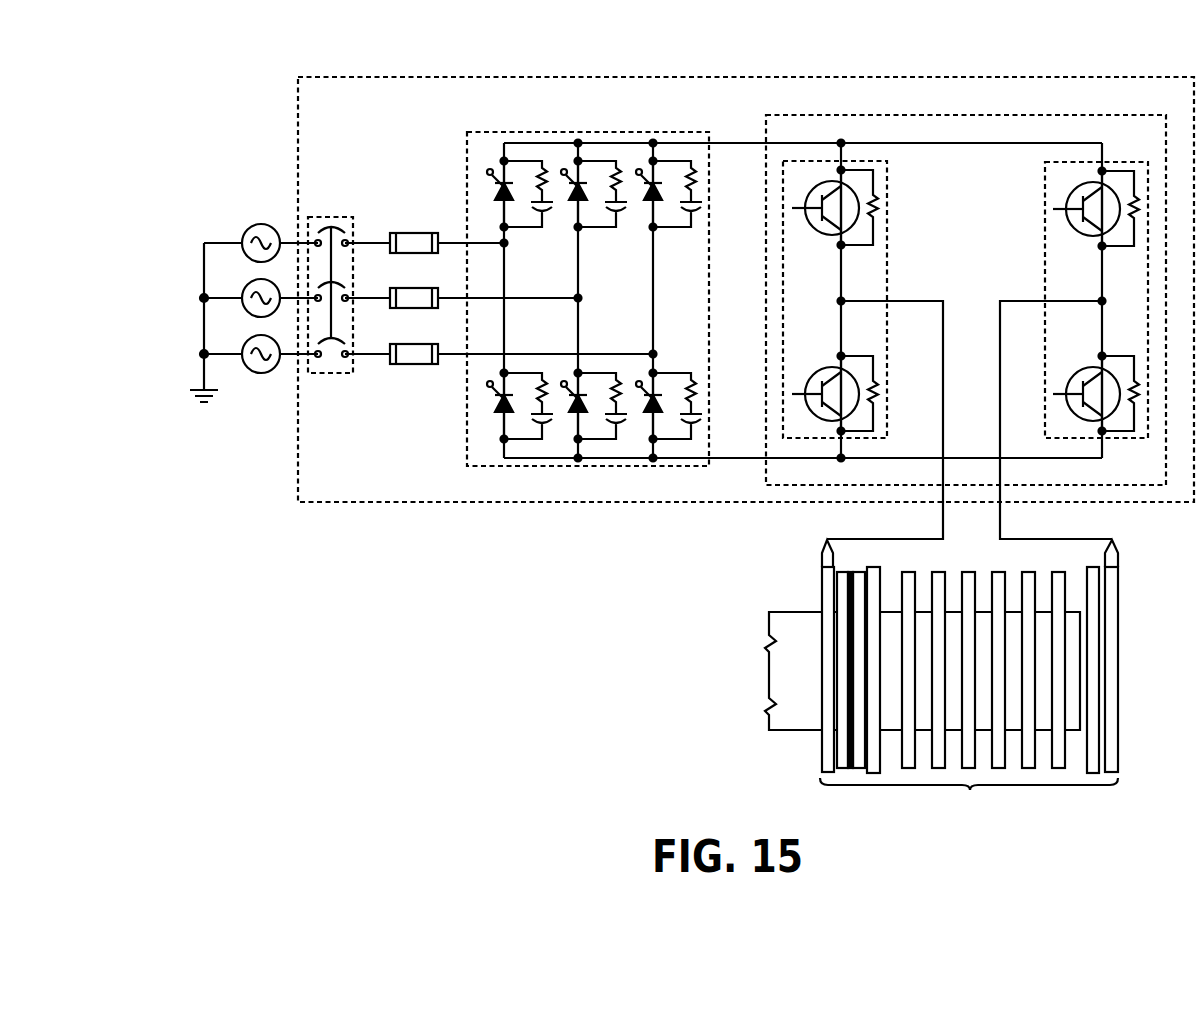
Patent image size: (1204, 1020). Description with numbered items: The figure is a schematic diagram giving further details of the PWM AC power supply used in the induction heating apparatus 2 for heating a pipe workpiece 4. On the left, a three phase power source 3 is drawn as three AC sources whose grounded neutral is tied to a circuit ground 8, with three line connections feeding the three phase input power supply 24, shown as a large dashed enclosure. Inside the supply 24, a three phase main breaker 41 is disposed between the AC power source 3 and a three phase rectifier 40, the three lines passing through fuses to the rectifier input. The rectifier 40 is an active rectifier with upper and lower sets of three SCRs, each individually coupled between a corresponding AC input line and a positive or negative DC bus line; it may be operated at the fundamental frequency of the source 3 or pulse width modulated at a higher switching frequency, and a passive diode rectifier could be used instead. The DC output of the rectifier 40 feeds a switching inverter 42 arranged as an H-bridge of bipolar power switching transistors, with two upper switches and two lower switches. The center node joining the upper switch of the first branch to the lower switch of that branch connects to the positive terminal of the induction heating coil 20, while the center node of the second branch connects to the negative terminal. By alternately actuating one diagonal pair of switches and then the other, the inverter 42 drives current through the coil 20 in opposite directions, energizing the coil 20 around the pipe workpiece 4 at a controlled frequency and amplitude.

The induction heating apparatus 2 is at (183, 54).
The three phase power source 3 is at (236, 197).
The circuit ground 8 is at (206, 385).
The three phase input power supply 24 is at (749, 77).
The three phase main breaker 41 is at (336, 216).
The three phase rectifier 40 is at (587, 132).
The switching inverter 42 is at (967, 115).
The solenoid coil 20 is at (968, 789).
The pipe workpiece 4 is at (780, 612).